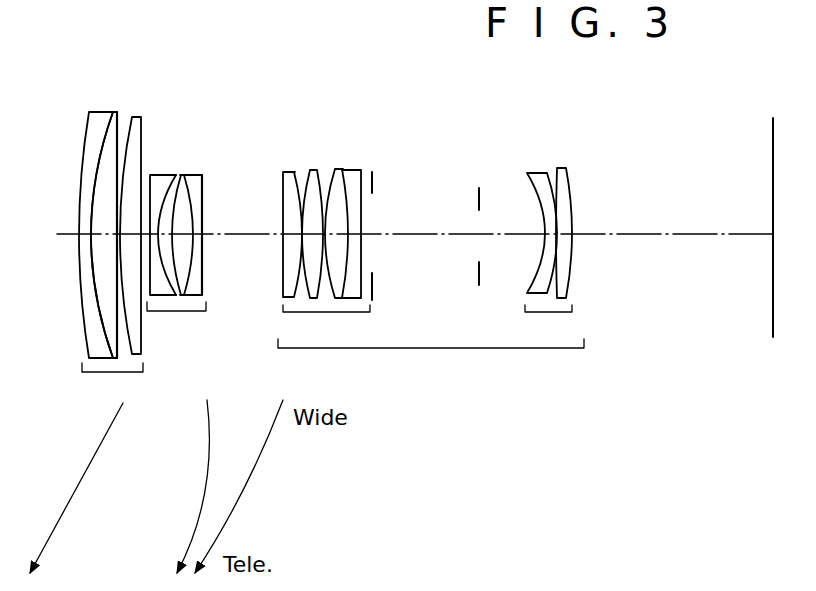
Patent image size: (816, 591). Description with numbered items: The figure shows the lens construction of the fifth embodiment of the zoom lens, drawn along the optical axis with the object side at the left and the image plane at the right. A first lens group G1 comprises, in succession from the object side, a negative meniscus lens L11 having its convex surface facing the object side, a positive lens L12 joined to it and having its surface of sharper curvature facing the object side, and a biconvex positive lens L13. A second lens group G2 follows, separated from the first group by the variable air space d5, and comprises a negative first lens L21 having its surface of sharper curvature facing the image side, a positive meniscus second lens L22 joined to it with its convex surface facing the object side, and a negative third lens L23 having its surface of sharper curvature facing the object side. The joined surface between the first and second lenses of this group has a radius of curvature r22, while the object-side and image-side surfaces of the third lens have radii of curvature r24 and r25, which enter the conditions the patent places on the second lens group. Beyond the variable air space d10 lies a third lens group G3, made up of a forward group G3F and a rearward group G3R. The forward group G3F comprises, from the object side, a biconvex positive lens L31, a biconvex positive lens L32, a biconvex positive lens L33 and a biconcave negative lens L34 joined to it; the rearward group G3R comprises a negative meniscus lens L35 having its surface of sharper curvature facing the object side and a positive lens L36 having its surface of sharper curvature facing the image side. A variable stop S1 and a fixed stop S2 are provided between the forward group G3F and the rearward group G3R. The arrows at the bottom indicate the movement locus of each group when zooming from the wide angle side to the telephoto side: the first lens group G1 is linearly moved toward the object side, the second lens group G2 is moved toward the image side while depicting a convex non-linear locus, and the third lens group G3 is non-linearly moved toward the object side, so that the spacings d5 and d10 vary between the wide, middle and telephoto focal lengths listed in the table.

The negative meniscus lens L11 is at (93, 120).
The positive lens L12 is at (108, 122).
The biconvex positive lens L13 is at (137, 117).
The negative first lens L21 is at (206, 205).
The positive meniscus second lens L22 is at (217, 205).
The negative third lens L23 is at (225, 185).
The biconvex positive lens L31 is at (287, 170).
The biconvex positive lens L32 is at (312, 170).
The biconvex positive lens L33 is at (337, 168).
The biconcave negative lens L34 is at (350, 170).
The negative meniscus lens L35 is at (537, 175).
The positive lens L36 is at (562, 172).
The radius of curvature of the joined surface of the first and second lenses in the r22 is at (162, 213).
The radius of curvature of the object-side surface of the third lens in the second l r24 is at (188, 224).
The radius of curvature of the image-side surface of the third lens in the second le r25 is at (203, 270).
The variable air space between the first and second lens groups d5 is at (145, 237).
The variable air space between the second and third lens groups d10 is at (242, 236).
The variable stop S1 is at (374, 190).
The fixed stop S2 is at (477, 272).
The first lens group G1 is at (96, 316).
The second lens group G2 is at (207, 318).
The third lens group G3 is at (438, 224).
The forward group G3F is at (330, 202).
The rear group G3R is at (557, 233).